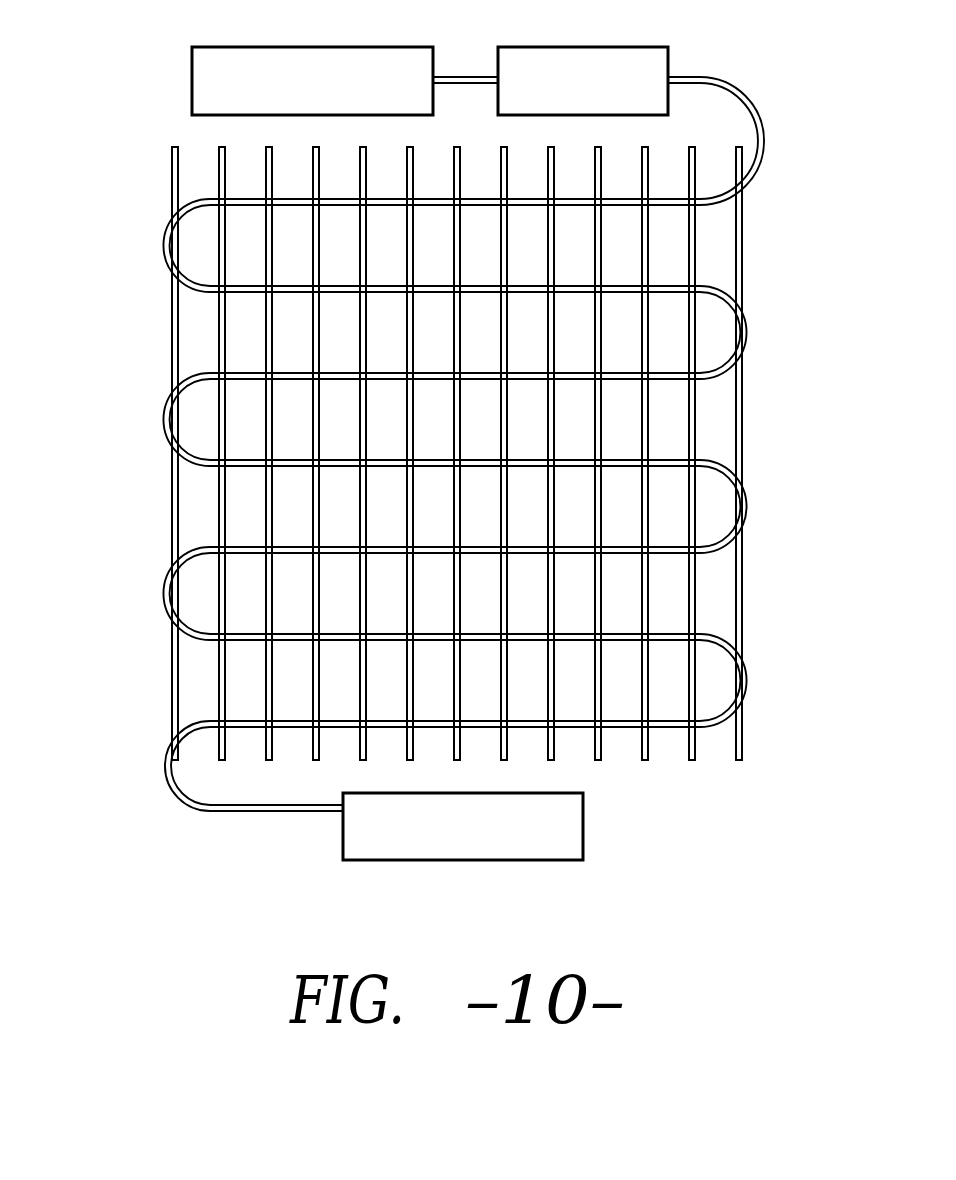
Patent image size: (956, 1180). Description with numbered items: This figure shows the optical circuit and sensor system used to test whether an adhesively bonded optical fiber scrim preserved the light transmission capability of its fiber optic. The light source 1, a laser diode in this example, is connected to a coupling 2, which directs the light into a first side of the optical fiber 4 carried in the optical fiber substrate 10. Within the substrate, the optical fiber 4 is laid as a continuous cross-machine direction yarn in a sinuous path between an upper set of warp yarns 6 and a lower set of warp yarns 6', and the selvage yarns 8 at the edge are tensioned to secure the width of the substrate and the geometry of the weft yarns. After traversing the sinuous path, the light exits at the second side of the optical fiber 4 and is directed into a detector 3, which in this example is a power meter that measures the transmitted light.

The light source 1 is at (378, 47).
The coupling 2 is at (623, 47).
The detector 3 is at (538, 860).
The optical fiber 4 is at (726, 466).
The upper set of warp yarns 6 is at (662, 453).
The lower set of warp yarns 6' is at (580, 453).
The selvage yarns 8 is at (746, 394).
The optical fiber substrate 10 is at (130, 172).